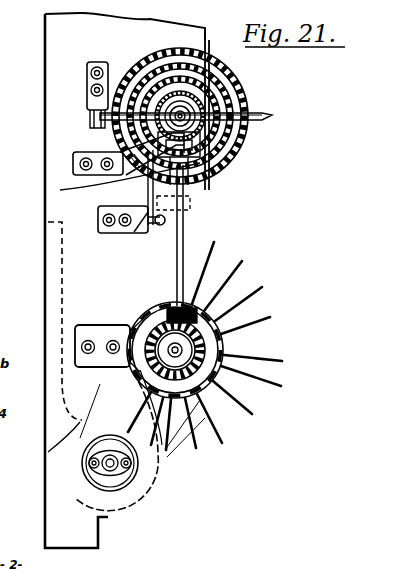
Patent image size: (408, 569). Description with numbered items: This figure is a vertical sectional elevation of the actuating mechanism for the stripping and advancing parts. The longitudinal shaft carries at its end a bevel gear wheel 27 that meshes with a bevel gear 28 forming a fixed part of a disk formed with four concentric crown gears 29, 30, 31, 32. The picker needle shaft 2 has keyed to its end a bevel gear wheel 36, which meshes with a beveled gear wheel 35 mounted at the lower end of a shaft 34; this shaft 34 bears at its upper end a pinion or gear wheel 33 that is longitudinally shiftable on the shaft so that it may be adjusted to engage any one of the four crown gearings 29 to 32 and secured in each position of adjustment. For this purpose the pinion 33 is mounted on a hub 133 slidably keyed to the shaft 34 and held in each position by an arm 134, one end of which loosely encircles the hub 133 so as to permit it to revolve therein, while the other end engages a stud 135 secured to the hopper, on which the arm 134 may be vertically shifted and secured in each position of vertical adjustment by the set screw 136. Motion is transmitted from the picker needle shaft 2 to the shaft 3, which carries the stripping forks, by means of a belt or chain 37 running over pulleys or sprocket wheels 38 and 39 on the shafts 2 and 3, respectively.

The picker needle shaft 2 is at (220, 372).
The shaft 3 is at (112, 470).
The bevel gear wheel 27 is at (232, 90).
The bevel gear 28 is at (215, 75).
The crown gear 29 is at (167, 48).
The crown gear 30 is at (203, 58).
The crown gear 31 is at (133, 68).
The crown gear 32 is at (178, 90).
The pinion 33 is at (243, 150).
The shaft 34 is at (186, 231).
The beveled gear wheel 35 is at (210, 312).
The bevel gear wheel 36 is at (208, 338).
The belt or chain 37 is at (106, 387).
The pulley or sprocket wheel 38 is at (228, 341).
The pulley or sprocket wheel 39 is at (128, 490).
The hub 133 is at (228, 170).
The arm 134 is at (205, 175).
The stud 135 is at (284, 114).
The set screw 136 is at (60, 190).